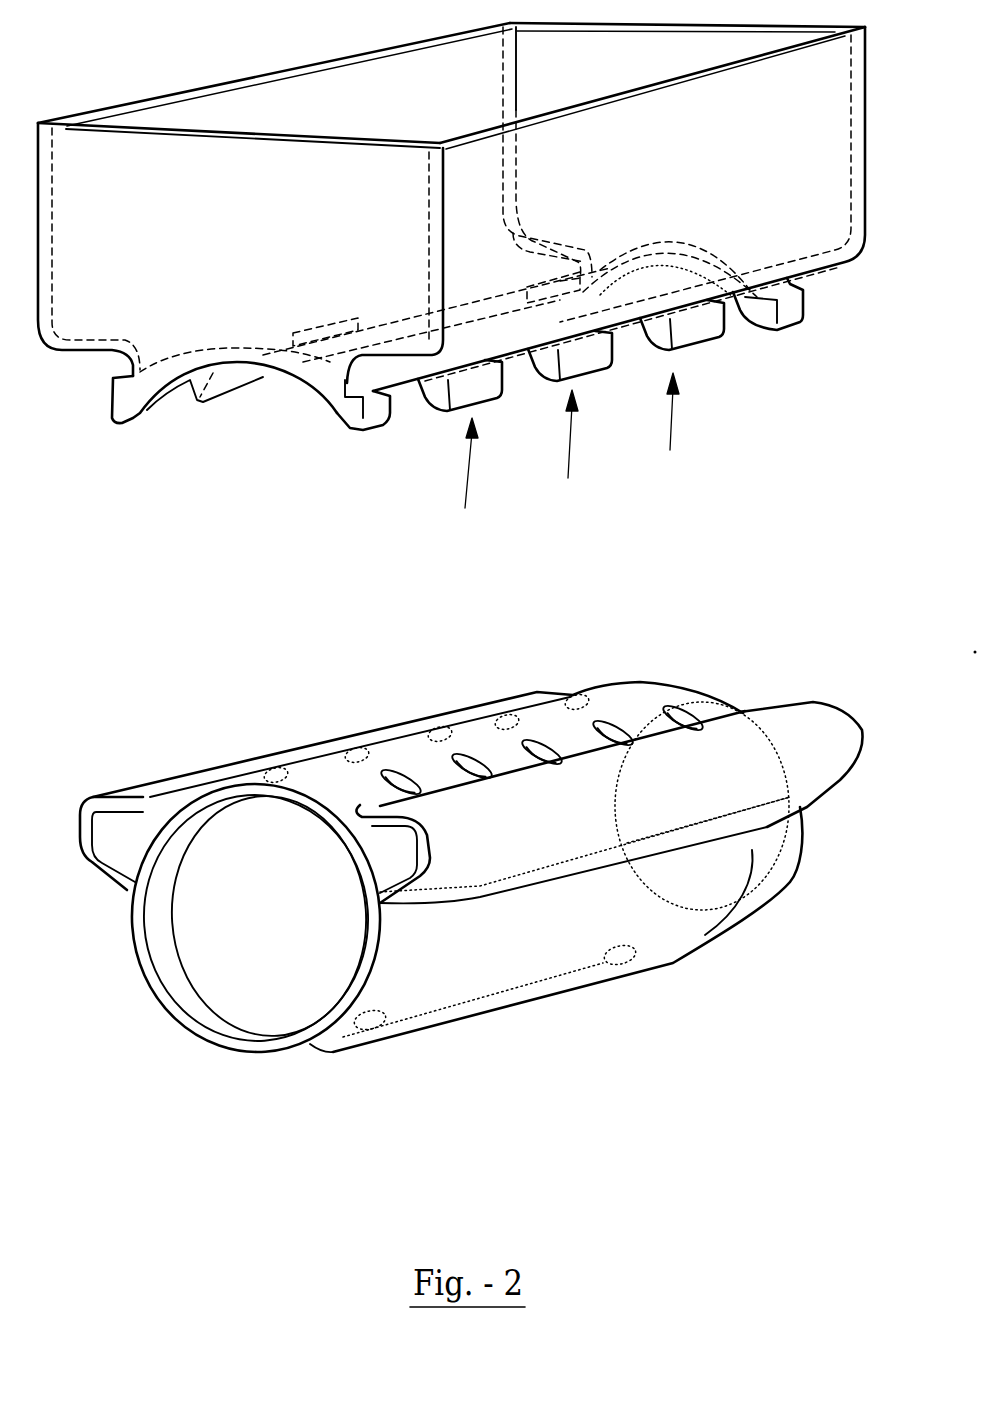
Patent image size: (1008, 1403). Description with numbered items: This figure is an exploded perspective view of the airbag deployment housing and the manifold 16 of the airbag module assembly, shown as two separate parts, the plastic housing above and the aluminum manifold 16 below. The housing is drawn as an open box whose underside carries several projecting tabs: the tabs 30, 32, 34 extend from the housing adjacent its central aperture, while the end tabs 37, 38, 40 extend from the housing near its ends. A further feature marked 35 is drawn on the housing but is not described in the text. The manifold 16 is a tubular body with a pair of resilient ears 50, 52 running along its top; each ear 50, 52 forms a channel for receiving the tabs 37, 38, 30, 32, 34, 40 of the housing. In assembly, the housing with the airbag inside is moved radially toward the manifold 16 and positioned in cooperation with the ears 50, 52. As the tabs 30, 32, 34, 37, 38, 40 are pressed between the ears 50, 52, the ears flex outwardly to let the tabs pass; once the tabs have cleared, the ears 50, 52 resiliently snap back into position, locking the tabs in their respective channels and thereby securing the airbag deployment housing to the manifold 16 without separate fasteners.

The manifold 16 is at (573, 950).
The tab 30 is at (242, 382).
The tab 32 is at (360, 322).
The tab 34 is at (447, 342).
The rib 35 is at (557, 267).
The end tab 37 is at (670, 450).
The end tab 38 is at (353, 416).
The end tab 40 is at (793, 312).
The ear 50 is at (88, 864).
The ear 52 is at (840, 787).